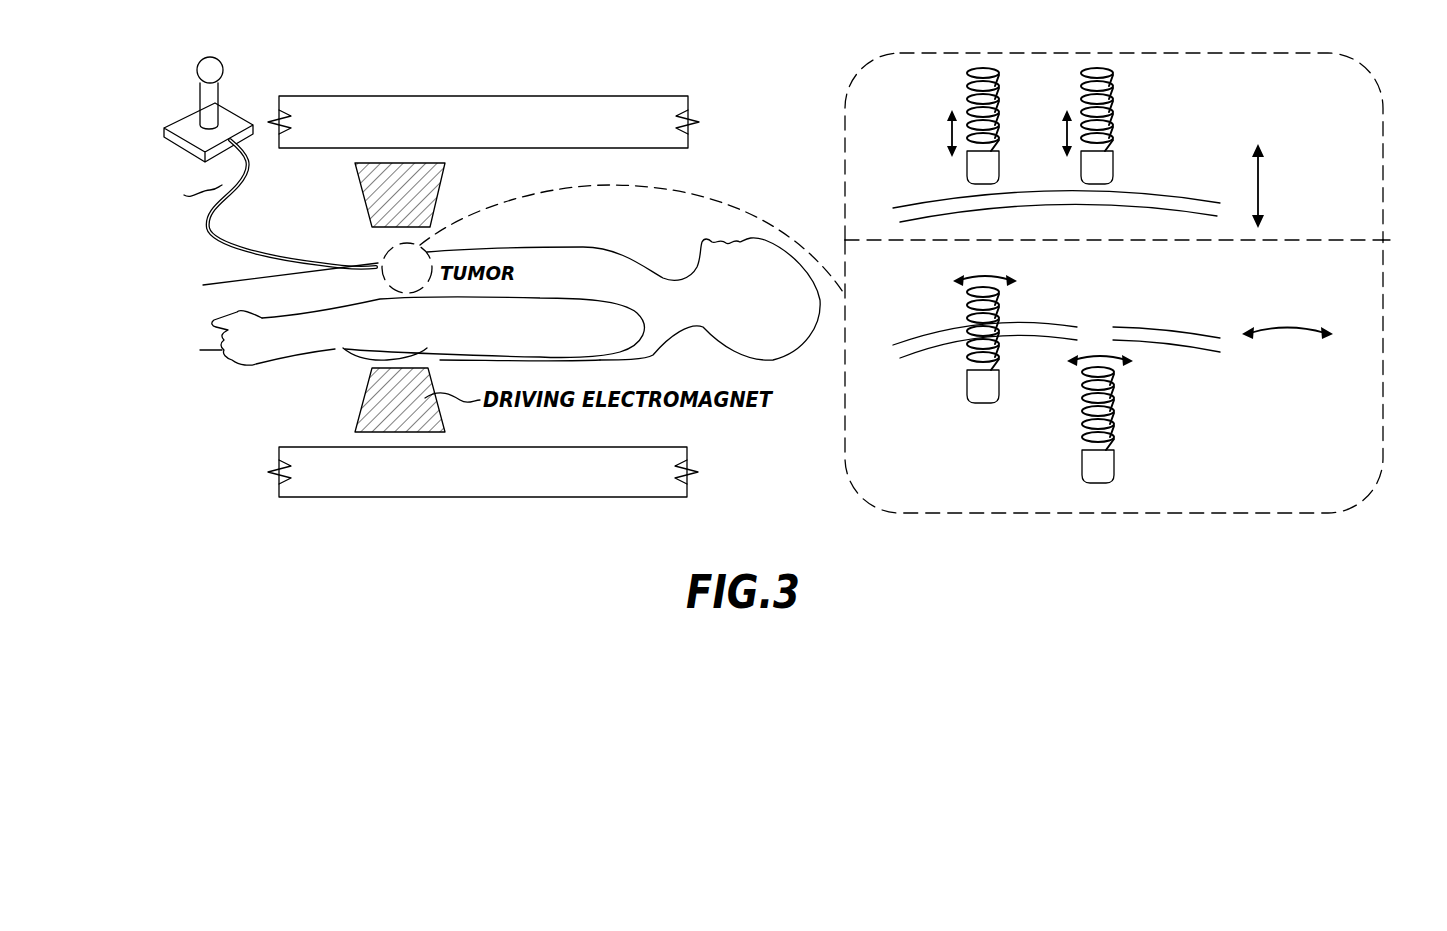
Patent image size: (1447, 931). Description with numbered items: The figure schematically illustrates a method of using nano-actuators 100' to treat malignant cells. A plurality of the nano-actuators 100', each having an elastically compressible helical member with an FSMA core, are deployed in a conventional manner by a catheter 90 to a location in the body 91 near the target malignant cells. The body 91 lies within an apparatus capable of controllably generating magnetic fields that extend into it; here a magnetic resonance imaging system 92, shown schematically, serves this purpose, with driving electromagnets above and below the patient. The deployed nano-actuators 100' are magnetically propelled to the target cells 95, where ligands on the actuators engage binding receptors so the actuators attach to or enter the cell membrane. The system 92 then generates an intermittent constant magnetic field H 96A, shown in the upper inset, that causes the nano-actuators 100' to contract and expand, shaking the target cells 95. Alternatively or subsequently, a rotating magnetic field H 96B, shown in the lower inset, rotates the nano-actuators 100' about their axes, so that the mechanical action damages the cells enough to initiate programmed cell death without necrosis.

The catheter 90 is at (205, 224).
The body 91 is at (221, 350).
The magnetic resonance imaging (MRI) system 92 is at (328, 499).
The target cells 95 is at (1127, 191).
The nano-actuator 100' is at (1038, 246).
The intermittent constant magnetic field H 96A is at (1383, 153).
The rotating magnetic field H 96B is at (1383, 310).